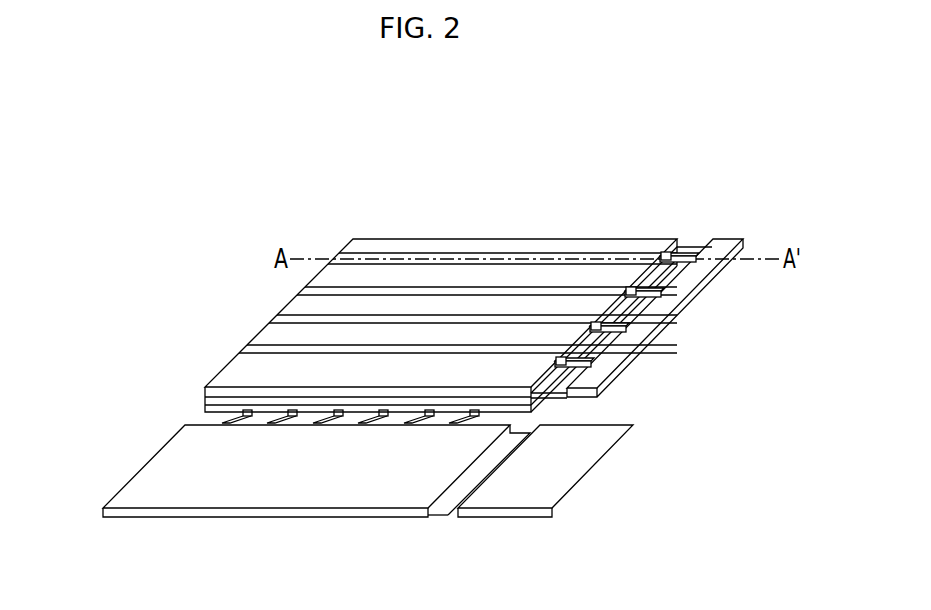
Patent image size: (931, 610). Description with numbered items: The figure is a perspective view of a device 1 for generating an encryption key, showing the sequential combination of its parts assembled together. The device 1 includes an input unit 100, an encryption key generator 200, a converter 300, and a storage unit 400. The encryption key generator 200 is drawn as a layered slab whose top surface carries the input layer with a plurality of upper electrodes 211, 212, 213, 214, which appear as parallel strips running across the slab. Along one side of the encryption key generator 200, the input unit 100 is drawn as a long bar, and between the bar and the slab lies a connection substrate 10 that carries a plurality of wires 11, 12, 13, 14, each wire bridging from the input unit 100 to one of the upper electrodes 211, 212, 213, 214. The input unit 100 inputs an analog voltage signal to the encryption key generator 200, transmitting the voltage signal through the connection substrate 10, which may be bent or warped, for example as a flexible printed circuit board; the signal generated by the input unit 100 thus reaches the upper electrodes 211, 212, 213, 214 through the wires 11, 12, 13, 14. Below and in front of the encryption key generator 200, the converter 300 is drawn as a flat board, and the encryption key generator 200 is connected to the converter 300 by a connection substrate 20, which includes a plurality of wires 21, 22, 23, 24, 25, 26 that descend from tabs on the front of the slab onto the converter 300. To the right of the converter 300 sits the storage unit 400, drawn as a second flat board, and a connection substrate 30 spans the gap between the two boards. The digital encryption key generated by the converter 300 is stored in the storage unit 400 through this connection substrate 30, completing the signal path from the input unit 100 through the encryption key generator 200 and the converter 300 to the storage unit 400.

The device for generating an encryption key 1 is at (189, 243).
The connection substrate 10 is at (688, 250).
The wire 11 is at (673, 268).
The wire 12 is at (643, 302).
The wire 13 is at (613, 333).
The wire 14 is at (585, 367).
The input unit 100 is at (730, 241).
The encryption key generator 200 is at (195, 391).
The upper electrode 211 is at (458, 251).
The upper electrode 212 is at (303, 287).
The upper electrode 213 is at (275, 316).
The upper electrode 214 is at (244, 347).
The connection substrate 20 is at (515, 421).
The wire 21 is at (224, 424).
The wire 22 is at (269, 424).
The wire 23 is at (315, 424).
The wire 24 is at (360, 424).
The wire 25 is at (406, 424).
The wire 26 is at (451, 424).
The connection substrate 30 is at (448, 517).
The converter 300 is at (122, 512).
The storage unit 400 is at (508, 512).